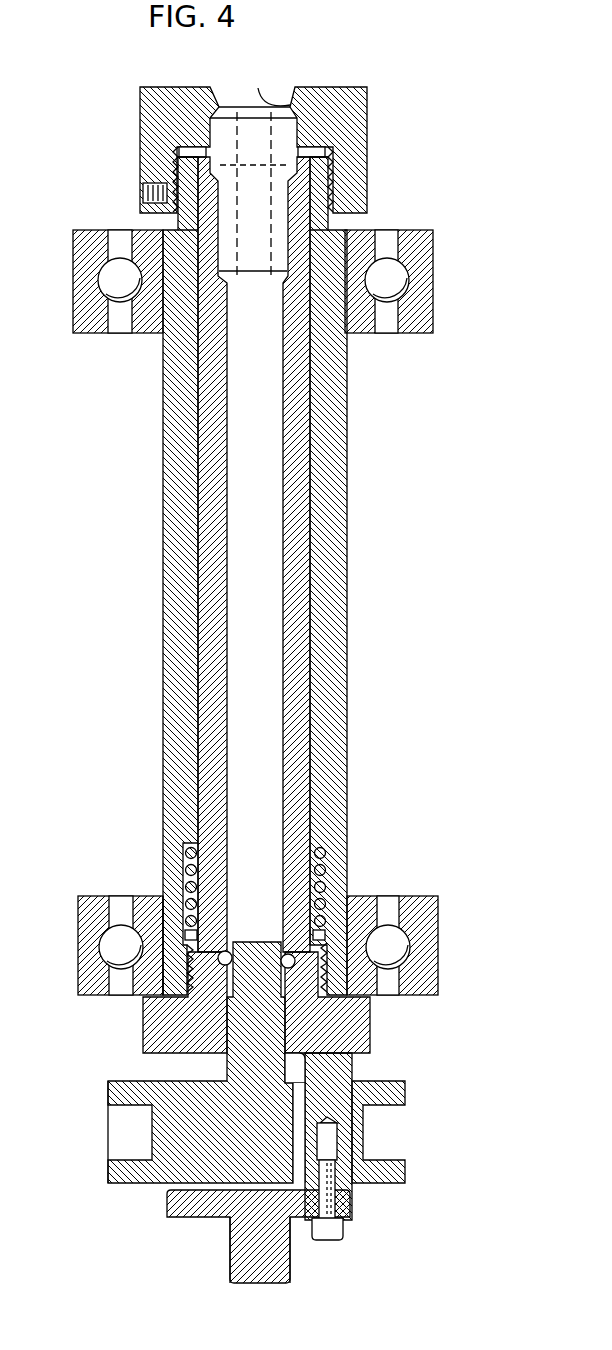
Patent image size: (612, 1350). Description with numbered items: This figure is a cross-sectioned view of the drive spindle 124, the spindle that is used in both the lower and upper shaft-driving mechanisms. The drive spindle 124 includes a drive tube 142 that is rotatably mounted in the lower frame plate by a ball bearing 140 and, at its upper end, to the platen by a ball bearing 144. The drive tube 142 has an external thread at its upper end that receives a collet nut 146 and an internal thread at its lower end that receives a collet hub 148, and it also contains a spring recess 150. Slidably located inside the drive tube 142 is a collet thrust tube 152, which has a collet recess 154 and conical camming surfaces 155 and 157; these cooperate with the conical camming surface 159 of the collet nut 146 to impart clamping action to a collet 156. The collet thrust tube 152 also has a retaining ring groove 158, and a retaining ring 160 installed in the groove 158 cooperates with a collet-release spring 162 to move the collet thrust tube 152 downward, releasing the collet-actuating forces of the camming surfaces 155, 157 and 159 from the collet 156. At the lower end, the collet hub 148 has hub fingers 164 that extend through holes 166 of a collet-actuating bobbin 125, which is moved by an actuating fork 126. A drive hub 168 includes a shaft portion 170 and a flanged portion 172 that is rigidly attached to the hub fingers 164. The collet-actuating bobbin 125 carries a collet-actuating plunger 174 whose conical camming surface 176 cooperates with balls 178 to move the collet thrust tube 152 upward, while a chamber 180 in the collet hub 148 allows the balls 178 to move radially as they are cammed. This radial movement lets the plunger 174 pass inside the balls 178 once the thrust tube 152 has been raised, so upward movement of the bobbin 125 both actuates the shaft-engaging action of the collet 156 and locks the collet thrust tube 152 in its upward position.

The drive spindle 124 is at (372, 518).
The collet-actuating bobbin 125 is at (108, 1177).
The actuating fork 126 is at (406, 1181).
The ball bearing 140 is at (431, 895).
The drive tube 142 is at (347, 421).
The ball bearing 144 is at (433, 259).
The collet nut 146 is at (355, 95).
The collet hub 148 is at (370, 1031).
The spring recess 150 is at (324, 843).
The collet thrust tube 152 is at (310, 632).
The collet recess 154 is at (327, 230).
The conical camming surface 155 is at (292, 160).
The collet 156 is at (180, 128).
The conical camming surface 157 is at (283, 277).
The retaining ring groove 158 is at (206, 925).
The conical camming surface 159 is at (258, 88).
The retaining ring 160 is at (184, 930).
The collet-release spring 162 is at (186, 864).
The hub fingers 164 is at (352, 1068).
The holes 166 is at (363, 1110).
The drive hub 168 is at (208, 1220).
The shaft portion 170 is at (290, 1255).
The flanged portion 172 is at (166, 1197).
The collet-actuating plunger 174 is at (224, 1008).
The conical camming surface 176 is at (228, 965).
The balls 178 is at (292, 968).
The chamber 180 is at (227, 950).